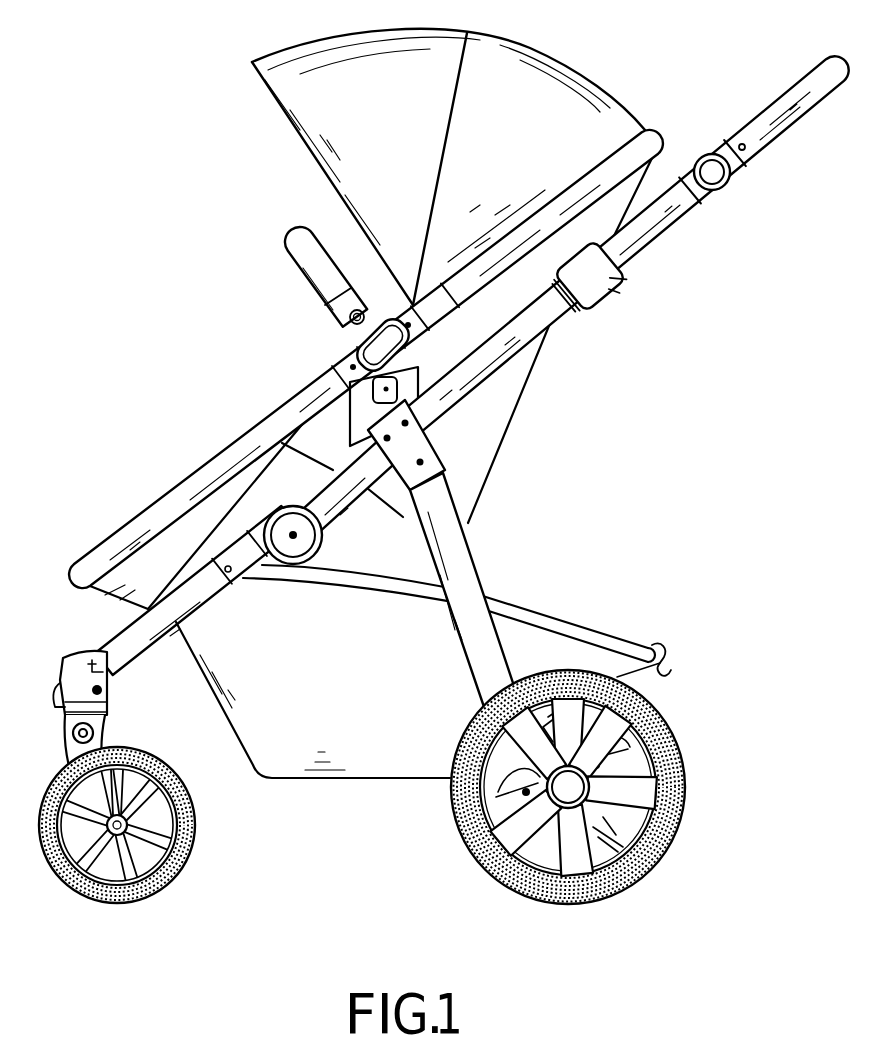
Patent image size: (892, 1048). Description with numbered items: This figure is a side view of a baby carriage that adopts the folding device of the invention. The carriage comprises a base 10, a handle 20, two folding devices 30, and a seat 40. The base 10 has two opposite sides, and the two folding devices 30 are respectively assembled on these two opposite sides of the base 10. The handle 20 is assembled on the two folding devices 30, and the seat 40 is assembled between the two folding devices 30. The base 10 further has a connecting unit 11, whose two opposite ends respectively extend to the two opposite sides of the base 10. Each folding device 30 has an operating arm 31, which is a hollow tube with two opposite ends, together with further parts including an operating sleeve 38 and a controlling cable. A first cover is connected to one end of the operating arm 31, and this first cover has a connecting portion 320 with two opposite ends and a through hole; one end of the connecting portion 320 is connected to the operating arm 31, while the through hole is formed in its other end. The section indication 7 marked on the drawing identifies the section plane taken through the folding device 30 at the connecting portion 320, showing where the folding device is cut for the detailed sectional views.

The base 10 is at (600, 600).
The connecting unit 11 is at (133, 643).
The handle 20 is at (822, 78).
The folding device 30 is at (553, 332).
The operating arm 31 is at (457, 383).
The operating sleeve 38 is at (607, 268).
The seat 40 is at (163, 508).
The connecting portion 320 is at (283, 482).
The section line 7- 7 is at (371, 547).